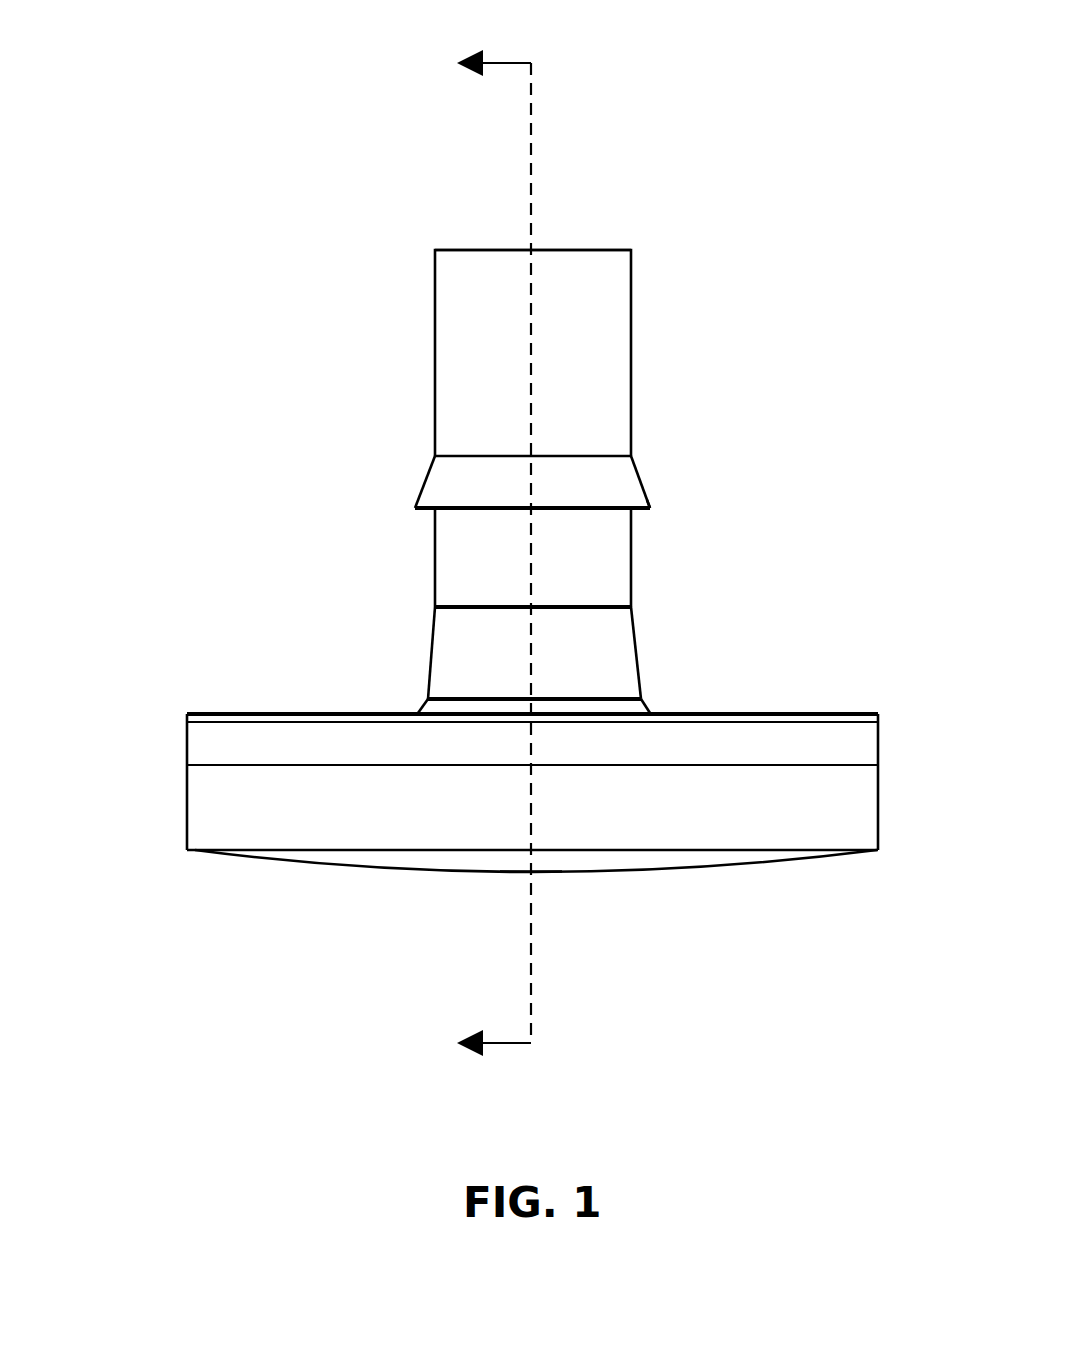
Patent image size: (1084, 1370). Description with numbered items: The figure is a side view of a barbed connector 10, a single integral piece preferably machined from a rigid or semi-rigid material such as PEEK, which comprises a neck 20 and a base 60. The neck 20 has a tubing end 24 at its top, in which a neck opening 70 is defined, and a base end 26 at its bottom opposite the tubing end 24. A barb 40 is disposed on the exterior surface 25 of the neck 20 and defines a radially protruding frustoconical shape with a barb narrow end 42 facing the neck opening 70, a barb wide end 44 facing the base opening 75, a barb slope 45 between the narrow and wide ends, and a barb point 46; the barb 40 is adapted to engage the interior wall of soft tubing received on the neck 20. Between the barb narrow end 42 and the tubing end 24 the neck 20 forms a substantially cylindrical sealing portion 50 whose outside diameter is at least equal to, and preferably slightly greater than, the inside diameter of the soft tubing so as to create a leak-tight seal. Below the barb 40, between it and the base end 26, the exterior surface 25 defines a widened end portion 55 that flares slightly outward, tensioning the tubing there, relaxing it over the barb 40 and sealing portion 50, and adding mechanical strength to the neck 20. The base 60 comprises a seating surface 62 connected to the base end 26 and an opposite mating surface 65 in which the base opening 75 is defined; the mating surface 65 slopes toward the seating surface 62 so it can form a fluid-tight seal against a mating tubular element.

The barbed connector 10 is at (764, 125).
The neck 20 is at (336, 255).
The tubing end 24 is at (631, 250).
The exterior surface 25 is at (435, 561).
The base end 26 is at (650, 703).
The barb 40 is at (438, 485).
The barb narrow end 42 is at (588, 452).
The barb wide end 44 is at (590, 510).
The barb slope 45 is at (652, 507).
The barb point 46 is at (643, 477).
The substantially cylindrical sealing portion 50 is at (473, 368).
The widened end portion 55 is at (460, 654).
The base 60 is at (177, 714).
The seating surface 62 is at (755, 712).
The mating surface 65 is at (372, 863).
The neck opening 70 is at (531, 250).
The base opening 75 is at (550, 872).